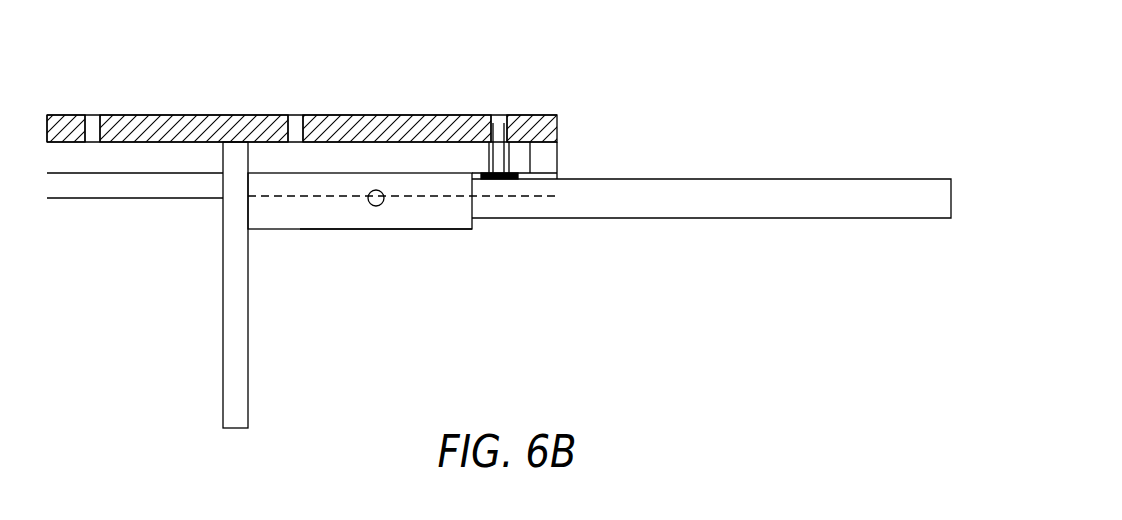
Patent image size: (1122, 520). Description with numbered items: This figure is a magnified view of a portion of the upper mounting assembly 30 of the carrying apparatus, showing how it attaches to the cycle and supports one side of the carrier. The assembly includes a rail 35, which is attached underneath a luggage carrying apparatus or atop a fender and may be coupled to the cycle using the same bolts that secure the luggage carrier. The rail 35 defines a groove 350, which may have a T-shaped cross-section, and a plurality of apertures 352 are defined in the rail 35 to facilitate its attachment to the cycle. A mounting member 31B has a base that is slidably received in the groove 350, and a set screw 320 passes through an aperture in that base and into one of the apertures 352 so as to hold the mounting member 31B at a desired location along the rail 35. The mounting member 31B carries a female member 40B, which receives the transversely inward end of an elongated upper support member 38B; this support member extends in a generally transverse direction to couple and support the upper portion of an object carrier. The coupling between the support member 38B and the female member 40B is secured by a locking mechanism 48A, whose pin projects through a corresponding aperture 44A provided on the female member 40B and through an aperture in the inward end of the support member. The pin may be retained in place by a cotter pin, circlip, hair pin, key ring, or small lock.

The upper mounting assembly 30 is at (568, 79).
The mounting member 31B is at (194, 267).
The rail 35 is at (388, 114).
The groove 350 is at (131, 156).
The apertures 352 is at (293, 127).
The set screw 320 is at (498, 125).
The upper support member 38B is at (752, 179).
The female member 40B is at (433, 230).
The aperture 44A is at (368, 199).
The locking mechanism 48A is at (390, 250).